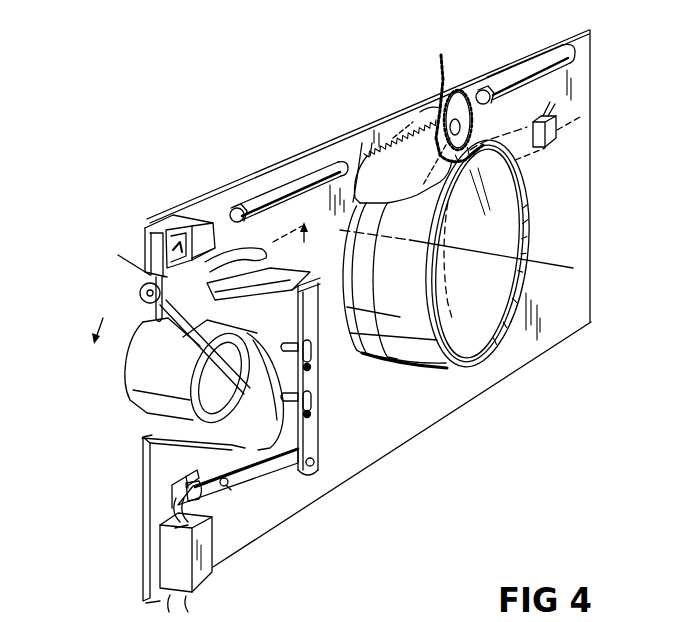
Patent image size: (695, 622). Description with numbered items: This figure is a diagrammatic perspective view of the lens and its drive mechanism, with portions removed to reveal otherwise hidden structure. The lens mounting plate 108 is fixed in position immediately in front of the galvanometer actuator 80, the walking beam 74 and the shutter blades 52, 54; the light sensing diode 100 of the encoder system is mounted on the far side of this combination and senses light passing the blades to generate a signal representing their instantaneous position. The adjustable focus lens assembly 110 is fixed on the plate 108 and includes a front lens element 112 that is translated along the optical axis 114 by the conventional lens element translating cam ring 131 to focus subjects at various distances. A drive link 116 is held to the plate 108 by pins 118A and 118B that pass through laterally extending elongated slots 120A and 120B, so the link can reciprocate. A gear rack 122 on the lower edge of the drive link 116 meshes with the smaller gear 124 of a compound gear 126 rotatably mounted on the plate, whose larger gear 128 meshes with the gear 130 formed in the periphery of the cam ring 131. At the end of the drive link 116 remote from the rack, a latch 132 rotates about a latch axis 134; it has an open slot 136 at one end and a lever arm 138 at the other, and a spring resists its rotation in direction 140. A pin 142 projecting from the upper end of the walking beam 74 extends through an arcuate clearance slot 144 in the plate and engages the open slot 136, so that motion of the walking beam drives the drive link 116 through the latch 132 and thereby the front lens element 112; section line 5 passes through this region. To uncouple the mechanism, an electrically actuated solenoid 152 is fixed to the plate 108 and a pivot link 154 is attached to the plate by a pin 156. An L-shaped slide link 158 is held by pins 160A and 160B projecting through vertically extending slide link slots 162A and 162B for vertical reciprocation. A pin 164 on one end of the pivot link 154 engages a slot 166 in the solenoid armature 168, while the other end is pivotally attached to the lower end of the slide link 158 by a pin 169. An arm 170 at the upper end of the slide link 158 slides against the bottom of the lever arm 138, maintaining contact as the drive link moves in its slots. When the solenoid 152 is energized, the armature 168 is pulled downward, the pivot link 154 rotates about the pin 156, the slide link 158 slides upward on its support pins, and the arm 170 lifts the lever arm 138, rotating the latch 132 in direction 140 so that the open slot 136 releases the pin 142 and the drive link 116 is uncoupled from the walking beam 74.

The section line 5— 5 is at (198, 296).
The shutter blade 52 is at (157, 327).
The shutter blade 54 is at (257, 447).
The walking beam 74 is at (190, 343).
The galvanometer actuator 80 is at (88, 416).
The light sensing diode 100 is at (548, 142).
The lens mounting plate 108 is at (583, 274).
The adjustable focus lens assembly 110 is at (568, 199).
The front lens element 112 is at (457, 335).
The optical axis 114 is at (540, 257).
The drive link 116 is at (360, 147).
The pin 118A is at (247, 204).
The pin 118B is at (485, 86).
The elongated slot 120A is at (310, 183).
The elongated slot 120B is at (548, 42).
The gear rack 122 is at (427, 111).
The smaller gear 124 is at (450, 110).
The compound gear 126 is at (441, 55).
The larger gear 128 is at (477, 92).
The gear 130 is at (483, 143).
The lens element translating cam ring 131 is at (360, 207).
The latch 132 is at (150, 242).
The latch axis 134 is at (150, 277).
The open slot 136 is at (140, 291).
The lever arm 138 is at (240, 287).
The direction 140 is at (177, 243).
The pin 142 is at (153, 322).
The arcuate clearance slot 144 is at (240, 257).
The electrically actuated solenoid 152 is at (202, 576).
The pivot link 154 is at (273, 470).
The pin 156 is at (224, 487).
The L-shaped slide link 158 is at (312, 437).
The pin 160A is at (312, 347).
The pin 160B is at (312, 396).
The slide link slot 162A is at (311, 367).
The slide link slot 162B is at (312, 414).
The pin 164 is at (183, 476).
The slot 166 is at (180, 527).
The solenoid armature 168 is at (170, 492).
The pin 169 is at (317, 480).
The arm 170 is at (307, 287).